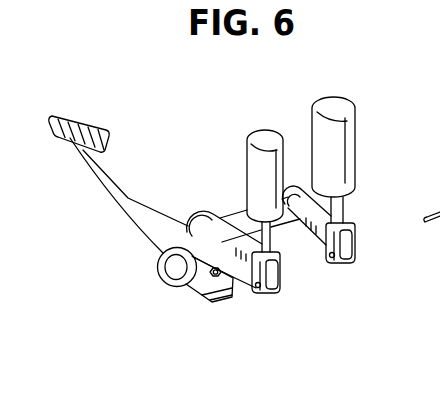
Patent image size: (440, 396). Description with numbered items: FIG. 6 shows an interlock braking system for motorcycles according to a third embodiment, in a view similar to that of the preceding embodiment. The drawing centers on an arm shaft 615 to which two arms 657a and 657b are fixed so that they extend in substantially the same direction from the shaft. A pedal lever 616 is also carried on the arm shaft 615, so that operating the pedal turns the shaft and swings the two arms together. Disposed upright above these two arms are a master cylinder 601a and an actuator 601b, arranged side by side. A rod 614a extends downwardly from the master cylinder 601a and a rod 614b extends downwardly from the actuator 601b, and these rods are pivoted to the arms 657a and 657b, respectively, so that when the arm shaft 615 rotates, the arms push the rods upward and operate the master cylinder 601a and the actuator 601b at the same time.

The master cylinder 601a is at (347, 115).
The actuator 601b is at (262, 131).
The rod 614a is at (344, 212).
The rod 614b is at (287, 249).
The arm shaft 615 is at (173, 269).
The pedal lever 616 is at (130, 228).
The arm 657a is at (325, 258).
The arm 657b is at (252, 294).